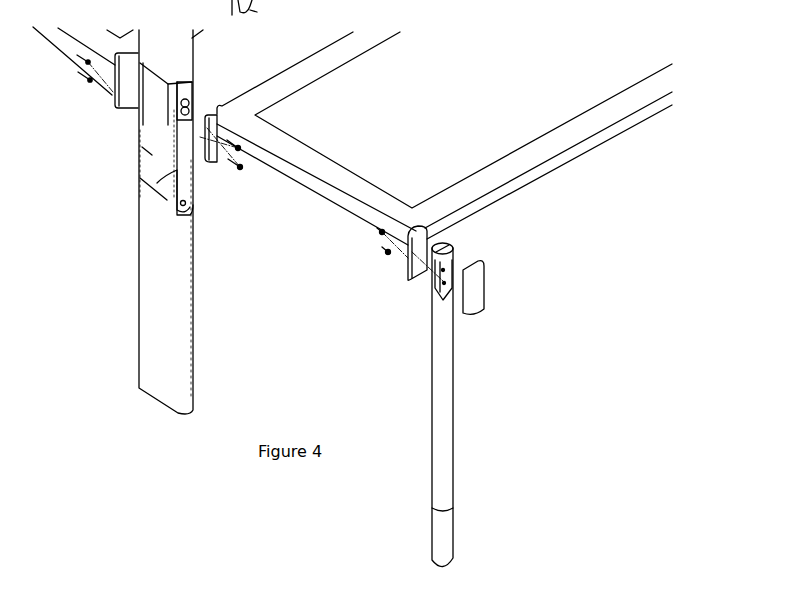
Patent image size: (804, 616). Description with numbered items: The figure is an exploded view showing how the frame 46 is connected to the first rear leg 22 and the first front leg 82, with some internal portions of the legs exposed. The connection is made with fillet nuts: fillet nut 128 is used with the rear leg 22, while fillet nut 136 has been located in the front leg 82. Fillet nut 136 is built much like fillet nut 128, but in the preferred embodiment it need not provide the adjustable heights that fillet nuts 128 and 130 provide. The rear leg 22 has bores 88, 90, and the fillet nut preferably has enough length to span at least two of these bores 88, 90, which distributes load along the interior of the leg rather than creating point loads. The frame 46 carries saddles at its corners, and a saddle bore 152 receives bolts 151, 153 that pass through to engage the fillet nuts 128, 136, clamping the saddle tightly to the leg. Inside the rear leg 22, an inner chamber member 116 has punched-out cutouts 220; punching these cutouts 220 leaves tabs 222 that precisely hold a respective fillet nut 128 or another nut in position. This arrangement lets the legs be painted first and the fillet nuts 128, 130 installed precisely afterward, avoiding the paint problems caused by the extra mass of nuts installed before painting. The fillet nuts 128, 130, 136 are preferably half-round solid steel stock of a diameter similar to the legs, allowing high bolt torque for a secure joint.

The first rear leg 22 is at (232, 74).
The frame 46 is at (340, 77).
The first front leg 82 is at (454, 350).
The bore 88 is at (177, 182).
The bore 90 is at (173, 180).
The inner chamber member 116 is at (188, 95).
The fillet nut 128 is at (193, 183).
The fillet nut 130 is at (137, 147).
The fillet nut 136 is at (437, 246).
The bolt 151 is at (241, 151).
The bore 152 is at (257, 12).
The bolt 153 is at (243, 170).
The cutout 220 is at (188, 104).
The tab 222 is at (186, 114).